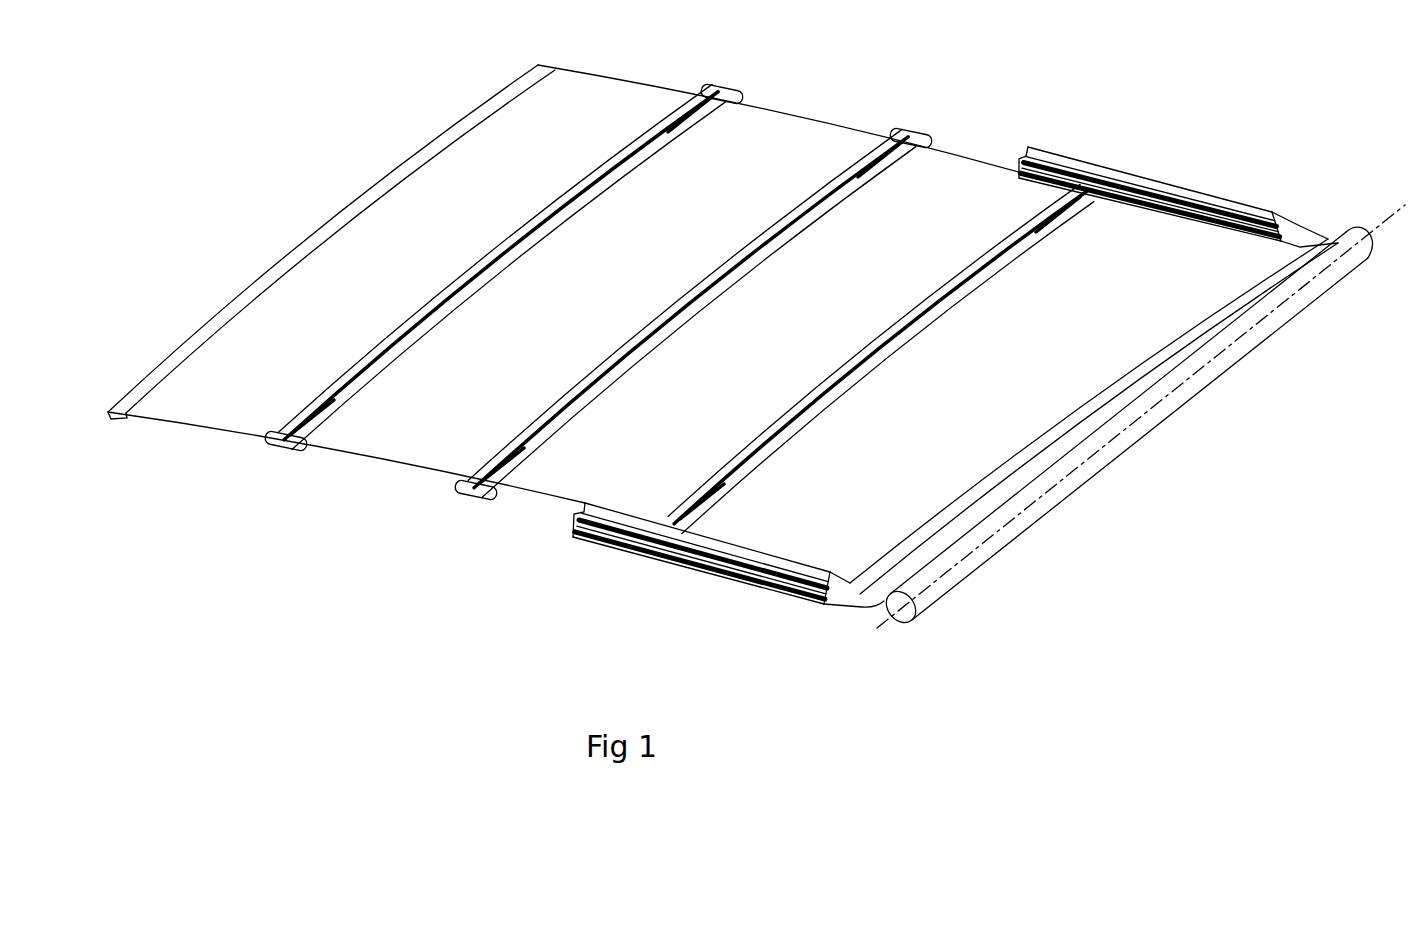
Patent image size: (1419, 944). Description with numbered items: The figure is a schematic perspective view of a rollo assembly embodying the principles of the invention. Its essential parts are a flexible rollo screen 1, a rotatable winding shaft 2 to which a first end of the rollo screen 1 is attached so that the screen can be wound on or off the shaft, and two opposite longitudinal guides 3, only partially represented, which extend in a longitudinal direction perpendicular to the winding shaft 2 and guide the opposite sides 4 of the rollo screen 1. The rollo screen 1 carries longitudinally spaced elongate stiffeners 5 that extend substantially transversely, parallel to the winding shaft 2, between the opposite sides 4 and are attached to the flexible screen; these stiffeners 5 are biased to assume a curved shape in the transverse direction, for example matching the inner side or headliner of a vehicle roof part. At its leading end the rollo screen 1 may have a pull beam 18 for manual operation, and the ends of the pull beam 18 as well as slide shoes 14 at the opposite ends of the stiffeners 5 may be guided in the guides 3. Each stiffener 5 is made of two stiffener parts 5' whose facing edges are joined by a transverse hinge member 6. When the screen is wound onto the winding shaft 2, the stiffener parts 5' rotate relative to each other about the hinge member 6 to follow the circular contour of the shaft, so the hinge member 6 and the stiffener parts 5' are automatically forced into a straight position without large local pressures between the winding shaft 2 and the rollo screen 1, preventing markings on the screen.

The flexible rollo screen 1 is at (413, 462).
The rotatable winding shaft 2 is at (1100, 463).
The longitudinal guide 3 is at (1160, 187).
The opposite sides of the rollo screen 4 is at (813, 117).
The elongate stiffener 5 is at (868, 133).
The stiffener part 5' is at (519, 410).
The hinge member 6 is at (541, 219).
The slide shoe 14 is at (737, 98).
The pull beam 18 is at (347, 216).